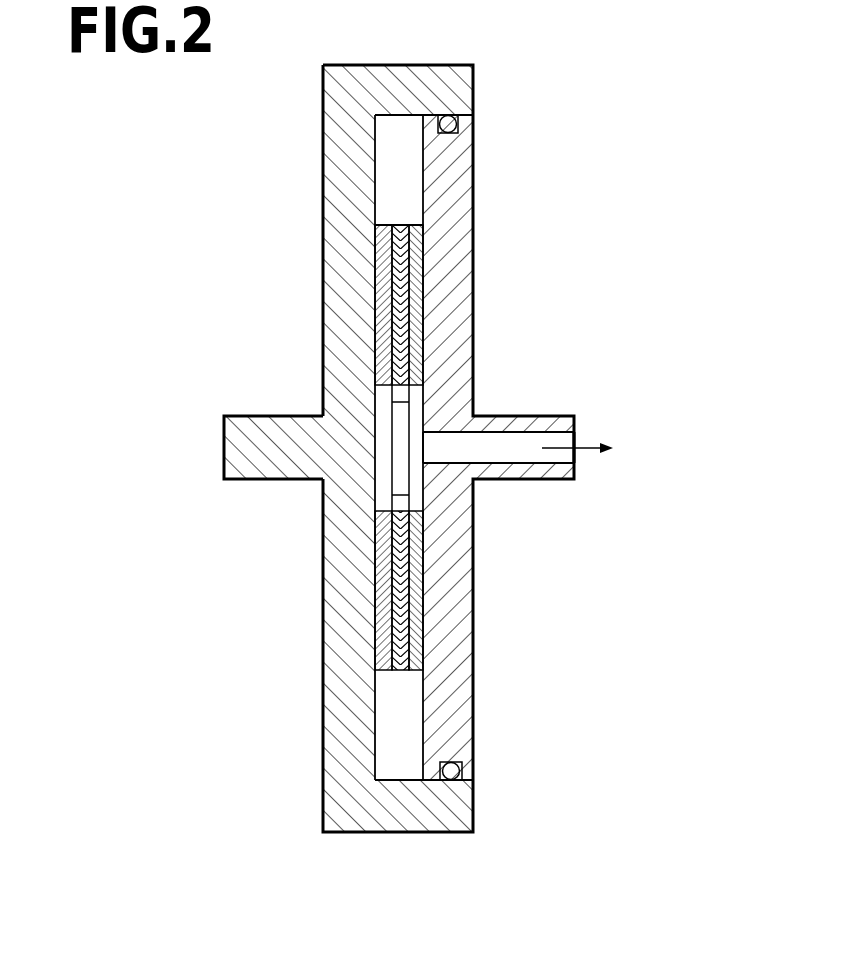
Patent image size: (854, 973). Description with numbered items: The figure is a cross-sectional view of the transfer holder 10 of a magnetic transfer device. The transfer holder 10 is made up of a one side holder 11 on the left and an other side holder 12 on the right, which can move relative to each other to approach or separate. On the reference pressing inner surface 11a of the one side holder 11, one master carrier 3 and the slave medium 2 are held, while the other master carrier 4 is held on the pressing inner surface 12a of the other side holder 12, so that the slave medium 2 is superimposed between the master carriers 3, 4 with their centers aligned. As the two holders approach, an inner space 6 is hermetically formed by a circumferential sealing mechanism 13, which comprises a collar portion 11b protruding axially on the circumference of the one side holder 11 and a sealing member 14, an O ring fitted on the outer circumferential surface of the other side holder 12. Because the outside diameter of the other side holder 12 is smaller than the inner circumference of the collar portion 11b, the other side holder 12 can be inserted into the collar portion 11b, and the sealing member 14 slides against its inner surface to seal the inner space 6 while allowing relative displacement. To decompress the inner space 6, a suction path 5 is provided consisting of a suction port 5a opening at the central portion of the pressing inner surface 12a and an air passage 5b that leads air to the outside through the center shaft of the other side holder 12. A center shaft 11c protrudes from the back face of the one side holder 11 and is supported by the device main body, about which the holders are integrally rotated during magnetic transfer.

The slave medium 2 is at (407, 224).
The master carrier 3 is at (378, 257).
The master carrier 4 is at (425, 296).
The port passage 5 is at (506, 442).
The suction port 5a is at (427, 450).
The air passage 5b is at (535, 458).
The inner space 6 is at (380, 128).
The transfer holder 10 is at (318, 50).
The one side holder 11 is at (320, 192).
The reference pressing inner surface 11a is at (378, 708).
The collar portion 11b is at (390, 64).
The center shaft 11c is at (272, 473).
The other side holder 12 is at (478, 224).
The pressing inner surface 12a is at (426, 686).
The sealing mechanism 13 is at (460, 100).
The sealing member 14 is at (452, 128).